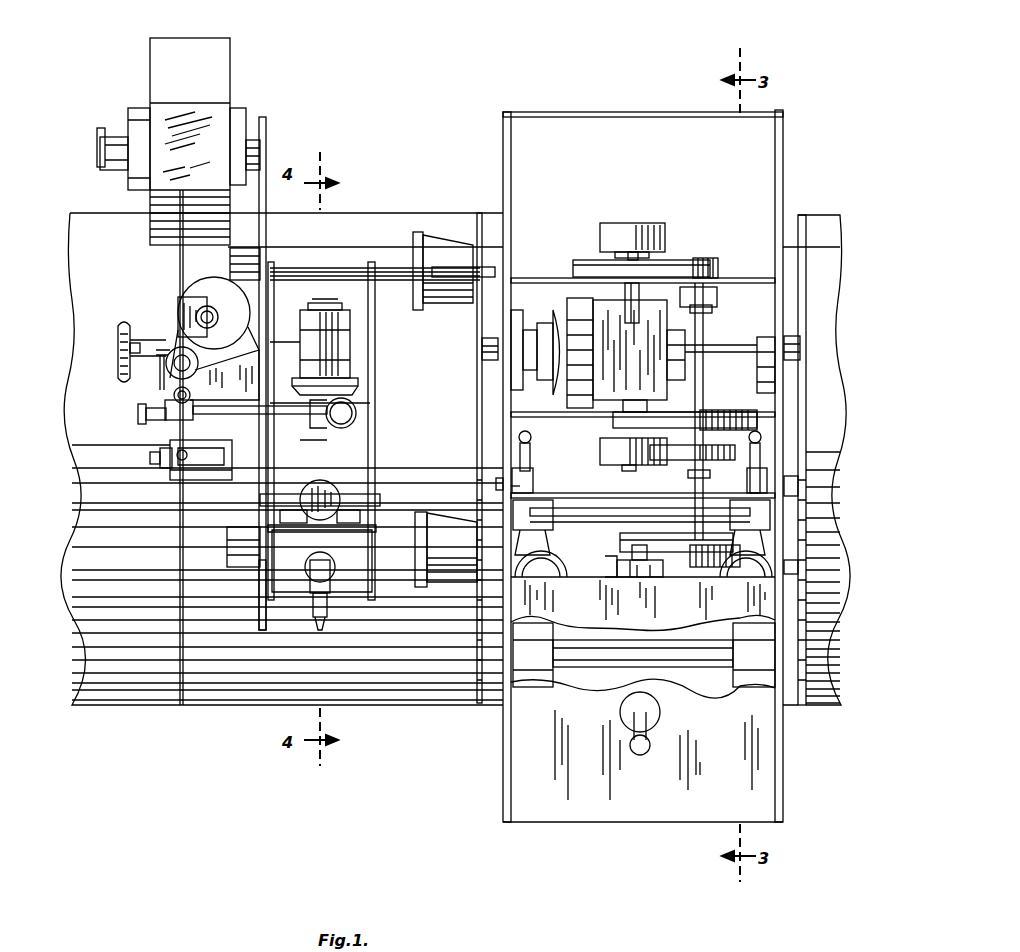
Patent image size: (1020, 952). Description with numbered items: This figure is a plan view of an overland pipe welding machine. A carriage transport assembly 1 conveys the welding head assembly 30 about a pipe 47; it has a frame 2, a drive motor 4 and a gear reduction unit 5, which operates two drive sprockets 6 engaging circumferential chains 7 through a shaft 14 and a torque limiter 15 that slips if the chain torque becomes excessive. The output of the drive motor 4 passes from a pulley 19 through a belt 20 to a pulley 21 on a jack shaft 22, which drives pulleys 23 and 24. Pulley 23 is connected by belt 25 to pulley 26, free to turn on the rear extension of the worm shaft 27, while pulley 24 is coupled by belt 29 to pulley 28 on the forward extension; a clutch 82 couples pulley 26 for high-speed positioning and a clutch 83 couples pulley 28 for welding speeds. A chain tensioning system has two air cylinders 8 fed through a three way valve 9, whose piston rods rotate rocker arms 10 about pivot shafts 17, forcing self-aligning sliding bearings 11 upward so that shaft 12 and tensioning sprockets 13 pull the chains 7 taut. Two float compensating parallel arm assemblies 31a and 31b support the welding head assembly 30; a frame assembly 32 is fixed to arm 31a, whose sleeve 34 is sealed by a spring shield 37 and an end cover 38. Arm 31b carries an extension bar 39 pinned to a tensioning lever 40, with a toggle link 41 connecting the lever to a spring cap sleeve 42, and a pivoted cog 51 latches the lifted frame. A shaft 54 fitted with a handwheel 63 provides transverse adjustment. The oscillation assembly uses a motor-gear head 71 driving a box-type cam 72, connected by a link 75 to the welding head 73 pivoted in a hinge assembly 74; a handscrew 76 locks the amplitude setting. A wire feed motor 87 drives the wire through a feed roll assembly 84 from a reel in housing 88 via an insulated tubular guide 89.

The carriage transport assembly 1 is at (484, 163).
The frame 2 is at (784, 752).
The drive motor 4 is at (628, 575).
The gear reduction unit 5 is at (662, 380).
The drive sprockets 6 is at (800, 345).
The circumferential chains 7 is at (800, 418).
The air cylinders 8 is at (545, 572).
The three way valve 9 is at (636, 718).
The rocker arms 10 is at (532, 540).
The sliding bearings 11 is at (506, 470).
The shaft 12 is at (500, 485).
The tensioning sprockets 13 is at (500, 500).
The shaft 14 is at (738, 345).
The torque limiter 15 is at (553, 318).
The pivot shafts 17 is at (608, 515).
The pulley 19 is at (664, 568).
The belt 20 is at (681, 548).
The pulley 21 is at (728, 575).
The jack shaft 22 is at (700, 318).
The pulley 23 is at (730, 410).
The pulley 24 is at (710, 260).
The belt 25 is at (672, 424).
The pulley 26 is at (620, 414).
The worm shaft 27 is at (640, 405).
The pulley 28 is at (672, 258).
The belt 29 is at (587, 262).
The welding head assembly 30 is at (128, 314).
The parallel arm assembly 31a is at (340, 247).
The parallel arm assembly 31b is at (400, 527).
The frame assembly 32 is at (376, 331).
The sleeve 34 is at (250, 258).
The spring shield 37 is at (447, 243).
The end cover 38 is at (230, 267).
The extension bar 39 is at (314, 566).
The tensioning lever 40 is at (314, 624).
The toggle link 41 is at (330, 578).
The spring cap sleeve 42 is at (330, 562).
The pipe 47 is at (122, 696).
The pivoted cog 51 is at (258, 610).
The shaft 54 is at (156, 350).
The handwheel 63 is at (120, 350).
The motor-gear head 71 is at (310, 330).
The box-type cam 72 is at (336, 426).
The welding head 73 is at (170, 440).
The hinge assembly 74 is at (166, 360).
The link 75 is at (252, 415).
The handscrew 76 is at (140, 417).
The clutch 82 is at (618, 452).
The clutch 83 is at (622, 228).
The feed roll assembly 84 is at (250, 342).
The wire feed motor 87 is at (205, 304).
The housing 88 is at (218, 82).
The tubular guide 89 is at (188, 458).